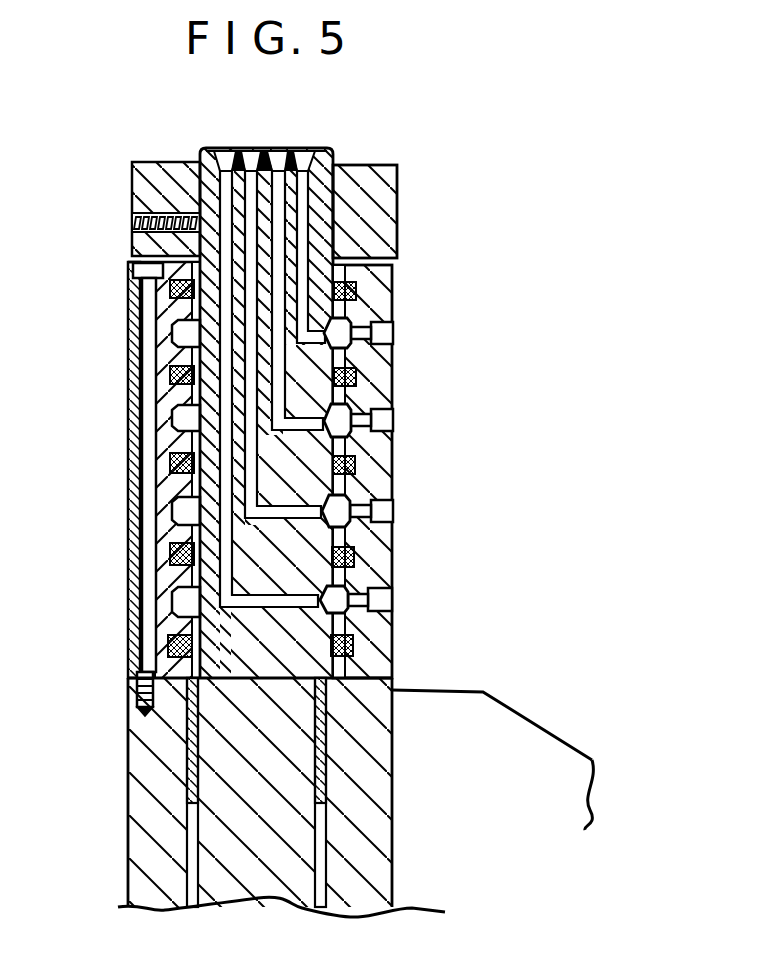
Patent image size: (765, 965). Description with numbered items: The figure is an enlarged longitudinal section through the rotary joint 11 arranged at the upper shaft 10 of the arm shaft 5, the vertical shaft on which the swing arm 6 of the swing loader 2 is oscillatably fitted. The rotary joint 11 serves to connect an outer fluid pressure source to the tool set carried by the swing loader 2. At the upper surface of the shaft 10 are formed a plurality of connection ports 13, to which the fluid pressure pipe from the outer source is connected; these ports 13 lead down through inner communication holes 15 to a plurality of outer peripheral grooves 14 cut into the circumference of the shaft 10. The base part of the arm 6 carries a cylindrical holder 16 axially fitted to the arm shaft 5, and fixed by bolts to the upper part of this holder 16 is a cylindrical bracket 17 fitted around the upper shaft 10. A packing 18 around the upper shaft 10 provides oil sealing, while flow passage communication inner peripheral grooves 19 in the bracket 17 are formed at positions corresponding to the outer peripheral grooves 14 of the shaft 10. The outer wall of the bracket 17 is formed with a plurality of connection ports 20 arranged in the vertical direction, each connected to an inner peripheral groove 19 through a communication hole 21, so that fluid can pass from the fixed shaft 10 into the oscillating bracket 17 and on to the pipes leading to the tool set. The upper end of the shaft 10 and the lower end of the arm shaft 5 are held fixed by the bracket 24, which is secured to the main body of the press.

The swing loader 2 is at (506, 692).
The arm shaft 5 is at (212, 827).
The swing arm 6 is at (540, 745).
The upper shaft 10 is at (215, 625).
The rotary joint 11 is at (128, 417).
The connection port 13 is at (274, 383).
The outer peripheral groove 14 is at (355, 348).
The inner communication hole 15 is at (305, 236).
The cylindrical holder 16 is at (148, 742).
The cylindrical bracket 17 is at (135, 541).
The packing 18 is at (178, 470).
The inner peripheral groove 19 is at (360, 306).
The connection port 20 is at (388, 336).
The communication hole 21 is at (357, 330).
The bracket 24 is at (392, 184).